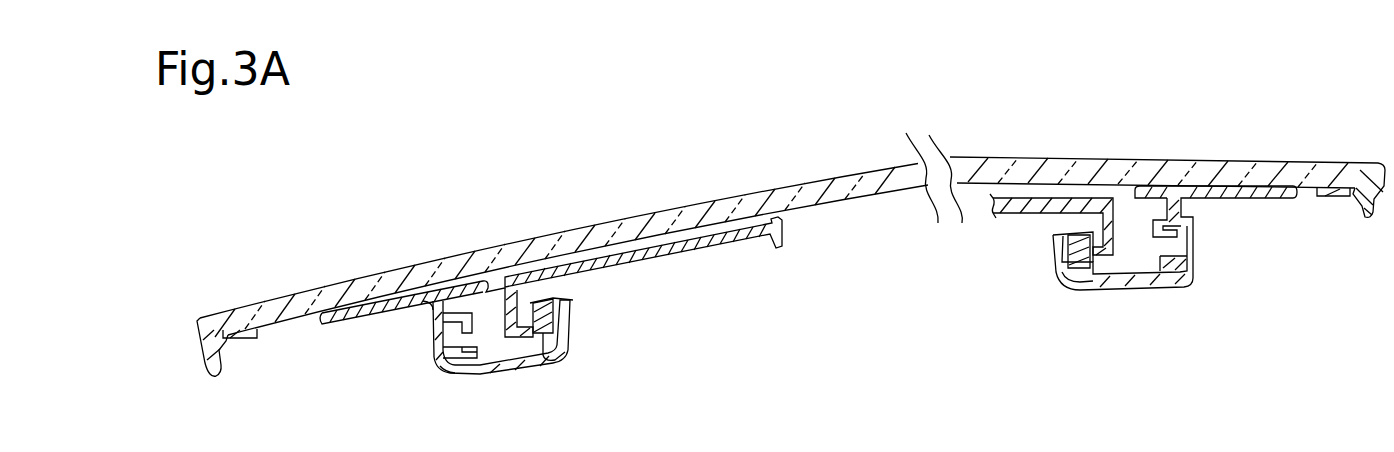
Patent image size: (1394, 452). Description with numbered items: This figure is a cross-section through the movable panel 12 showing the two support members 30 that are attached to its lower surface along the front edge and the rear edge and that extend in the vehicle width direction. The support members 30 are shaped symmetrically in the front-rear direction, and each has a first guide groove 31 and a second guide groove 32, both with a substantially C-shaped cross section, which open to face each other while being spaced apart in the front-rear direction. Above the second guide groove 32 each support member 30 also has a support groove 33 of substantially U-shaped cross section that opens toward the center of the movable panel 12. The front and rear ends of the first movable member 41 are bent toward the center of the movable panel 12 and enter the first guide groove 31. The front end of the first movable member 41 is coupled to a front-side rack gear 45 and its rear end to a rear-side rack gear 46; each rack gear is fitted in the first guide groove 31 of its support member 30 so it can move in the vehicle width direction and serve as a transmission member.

The movable panel 12 is at (783, 187).
The support member 30 is at (433, 346).
The first guide groove 31 is at (571, 325).
The second guide groove 32 is at (452, 374).
The support groove 33 is at (440, 317).
The first movable member 41 is at (672, 257).
The front-side rack gear 45 is at (553, 361).
The rear-side rack gear 46 is at (1082, 290).